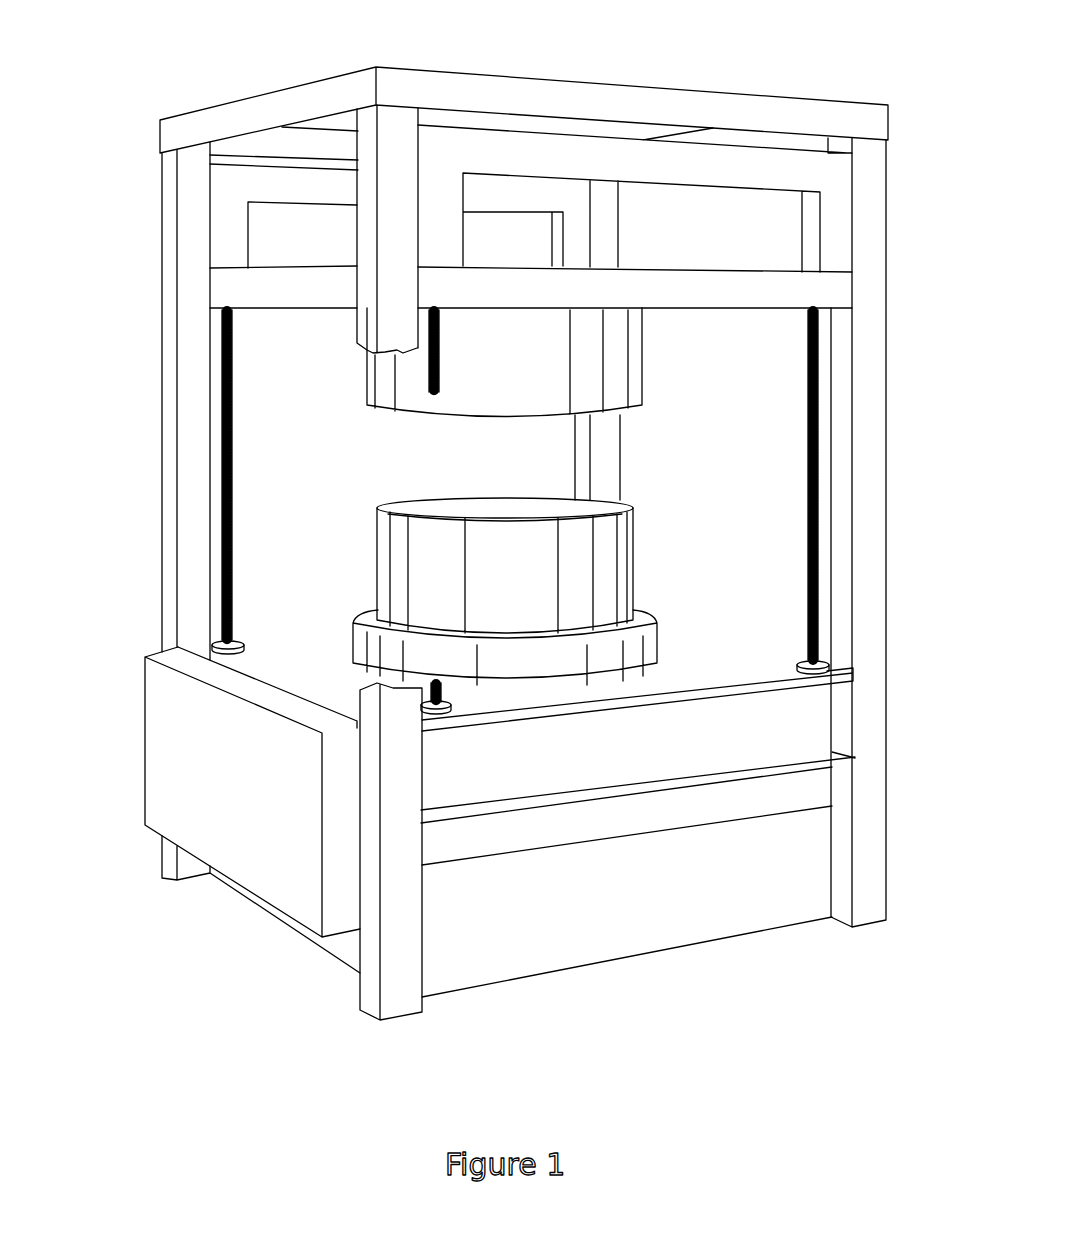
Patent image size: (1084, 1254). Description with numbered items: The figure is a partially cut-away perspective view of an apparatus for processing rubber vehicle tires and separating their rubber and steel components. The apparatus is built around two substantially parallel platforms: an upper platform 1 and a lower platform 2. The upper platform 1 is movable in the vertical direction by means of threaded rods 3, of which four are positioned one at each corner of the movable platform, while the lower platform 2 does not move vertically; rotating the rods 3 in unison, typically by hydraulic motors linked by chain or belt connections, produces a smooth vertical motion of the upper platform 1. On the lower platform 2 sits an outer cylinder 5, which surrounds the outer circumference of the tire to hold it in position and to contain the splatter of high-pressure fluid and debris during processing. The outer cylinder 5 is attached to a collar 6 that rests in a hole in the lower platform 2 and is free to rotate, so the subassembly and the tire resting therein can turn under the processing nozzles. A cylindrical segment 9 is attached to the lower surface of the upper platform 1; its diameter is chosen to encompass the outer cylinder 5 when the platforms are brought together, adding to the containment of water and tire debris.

The upper platform 1 is at (240, 290).
The lower platform 2 is at (752, 687).
The threaded rods 3 is at (228, 492).
The outer cylinder 5 is at (634, 535).
The collar 6 is at (577, 662).
The cylindrical segment 9 is at (642, 357).